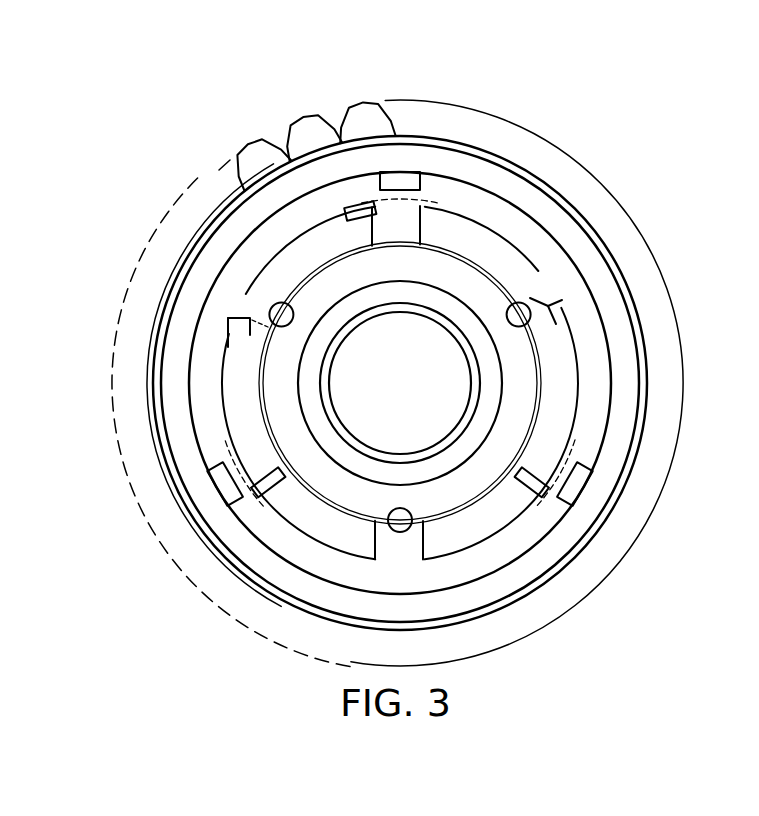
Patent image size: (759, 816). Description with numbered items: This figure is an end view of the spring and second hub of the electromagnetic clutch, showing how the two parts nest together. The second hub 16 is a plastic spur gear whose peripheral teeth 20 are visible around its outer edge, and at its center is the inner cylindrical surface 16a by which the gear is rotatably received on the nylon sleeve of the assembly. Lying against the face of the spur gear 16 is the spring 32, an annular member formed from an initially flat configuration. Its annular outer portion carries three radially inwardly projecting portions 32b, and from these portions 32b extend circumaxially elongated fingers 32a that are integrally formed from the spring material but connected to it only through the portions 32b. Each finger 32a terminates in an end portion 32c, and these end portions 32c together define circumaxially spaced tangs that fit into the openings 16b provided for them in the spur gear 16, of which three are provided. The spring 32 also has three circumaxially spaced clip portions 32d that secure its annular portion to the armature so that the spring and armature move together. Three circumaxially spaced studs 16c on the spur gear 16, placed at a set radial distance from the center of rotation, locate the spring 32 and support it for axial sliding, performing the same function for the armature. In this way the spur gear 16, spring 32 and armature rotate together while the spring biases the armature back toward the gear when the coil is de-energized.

The second hub 16 is at (190, 186).
The inner cylindrical surface 16a is at (469, 372).
The opening 16b is at (440, 200).
The studs 16c is at (300, 284).
The peripheral teeth 20 is at (350, 100).
The spring 32 is at (490, 187).
The fingers 32a is at (456, 240).
The radially inwardly projecting portions 32b is at (248, 305).
The end portions 32c is at (358, 212).
The clip portions 32d is at (397, 172).